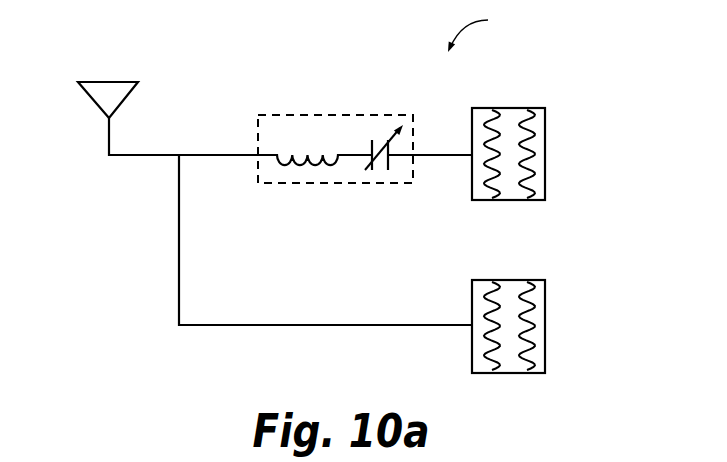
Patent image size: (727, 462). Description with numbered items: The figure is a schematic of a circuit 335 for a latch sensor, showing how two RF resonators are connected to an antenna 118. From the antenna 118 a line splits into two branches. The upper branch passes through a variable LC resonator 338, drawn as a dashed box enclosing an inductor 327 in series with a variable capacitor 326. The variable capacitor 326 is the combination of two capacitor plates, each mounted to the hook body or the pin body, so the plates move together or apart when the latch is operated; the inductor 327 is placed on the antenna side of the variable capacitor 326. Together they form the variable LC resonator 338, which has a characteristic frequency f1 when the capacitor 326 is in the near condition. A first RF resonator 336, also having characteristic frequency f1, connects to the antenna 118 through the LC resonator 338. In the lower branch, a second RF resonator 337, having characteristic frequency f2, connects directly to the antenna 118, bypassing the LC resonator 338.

The antenna 118 is at (98, 80).
The circuit 335 is at (493, 26).
The variable LC resonator 338 is at (283, 113).
The inductor 327 is at (300, 167).
The variable capacitor 326 is at (387, 165).
The first RF resonator 336 is at (547, 130).
The second RF resonator 337 is at (547, 298).